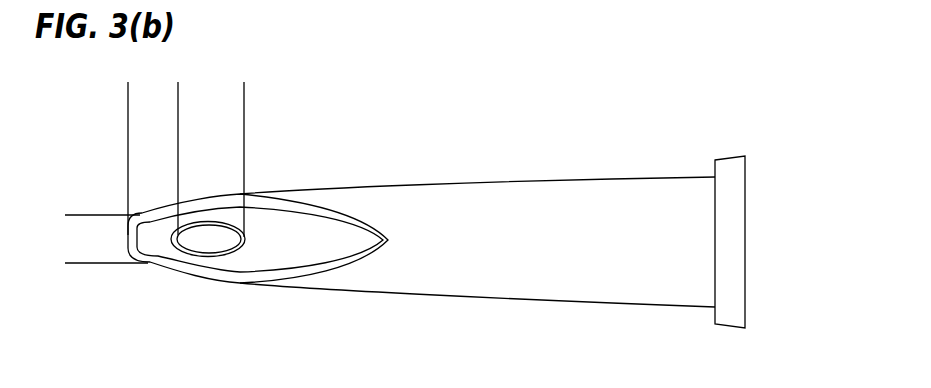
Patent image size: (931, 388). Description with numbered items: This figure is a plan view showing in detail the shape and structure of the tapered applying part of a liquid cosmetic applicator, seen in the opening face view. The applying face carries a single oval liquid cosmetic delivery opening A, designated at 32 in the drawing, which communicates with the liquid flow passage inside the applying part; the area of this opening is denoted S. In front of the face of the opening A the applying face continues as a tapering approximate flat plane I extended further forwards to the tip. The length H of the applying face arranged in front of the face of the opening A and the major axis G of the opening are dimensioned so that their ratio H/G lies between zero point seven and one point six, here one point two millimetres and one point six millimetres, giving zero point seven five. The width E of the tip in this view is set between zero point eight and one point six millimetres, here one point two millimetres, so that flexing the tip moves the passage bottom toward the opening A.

The tapering approximate flat plane I is at (150, 248).
The opening A is at (198, 279).
The liquid cosmetic delivery opening 32 is at (207, 247).
The area of opening A S is at (222, 250).
The length of the applying face arranged in front of the face of opening A H is at (176, 94).
The major axis of the opening G is at (180, 94).
The width of the tip E is at (82, 217).